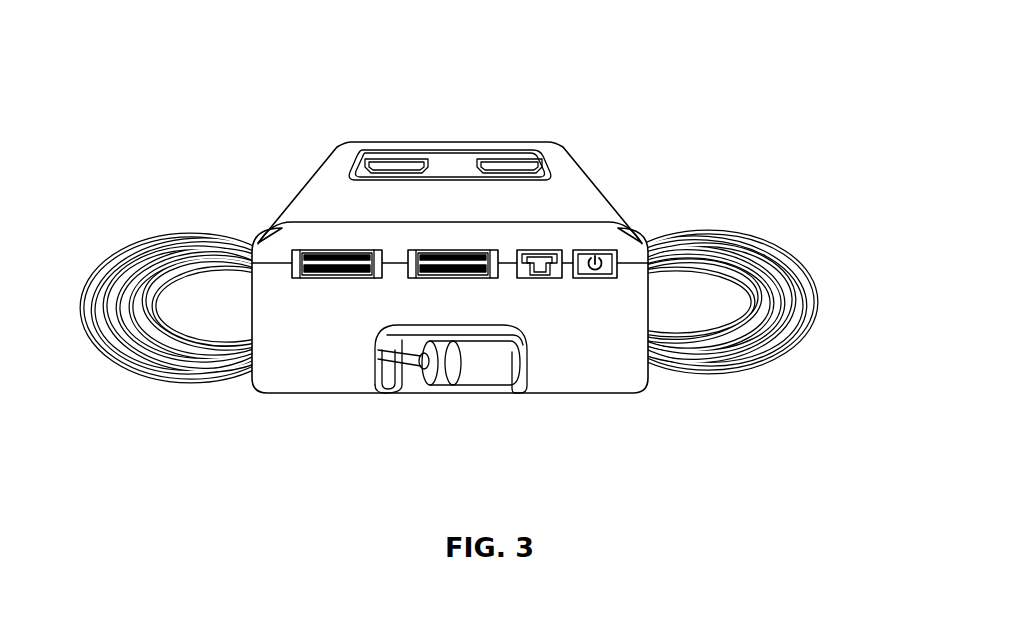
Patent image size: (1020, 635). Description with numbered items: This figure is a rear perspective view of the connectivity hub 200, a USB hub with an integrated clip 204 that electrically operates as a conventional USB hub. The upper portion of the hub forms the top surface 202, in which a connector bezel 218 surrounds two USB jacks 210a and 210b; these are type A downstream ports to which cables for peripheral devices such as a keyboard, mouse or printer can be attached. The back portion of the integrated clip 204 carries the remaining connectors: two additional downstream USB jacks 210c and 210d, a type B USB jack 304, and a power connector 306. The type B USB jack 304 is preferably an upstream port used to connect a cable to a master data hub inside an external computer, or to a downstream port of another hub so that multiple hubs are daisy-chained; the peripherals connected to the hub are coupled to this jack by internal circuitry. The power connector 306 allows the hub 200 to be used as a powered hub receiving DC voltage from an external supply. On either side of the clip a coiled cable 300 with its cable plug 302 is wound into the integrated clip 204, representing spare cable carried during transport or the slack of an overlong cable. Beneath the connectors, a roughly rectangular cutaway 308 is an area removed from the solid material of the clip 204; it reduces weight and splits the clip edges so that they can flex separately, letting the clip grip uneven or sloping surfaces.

The connectivity hub 200 is at (176, 44).
The top surface 202 is at (603, 183).
The clip 204 is at (660, 367).
The connector bezel 218 is at (551, 152).
The USB jack 210a is at (510, 160).
The USB jack 210b is at (397, 160).
The USB jack 210c is at (325, 278).
The USB jack 210d is at (420, 278).
The coiled cable 300 is at (213, 360).
The cable plug 302 is at (470, 391).
The type B USB jack 304 is at (537, 278).
The power connector 306 is at (583, 278).
The cutaway 308 is at (412, 390).